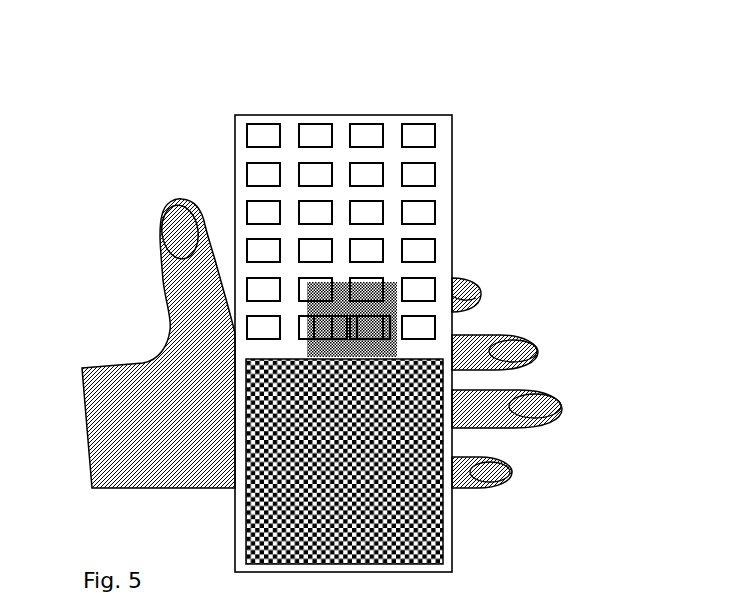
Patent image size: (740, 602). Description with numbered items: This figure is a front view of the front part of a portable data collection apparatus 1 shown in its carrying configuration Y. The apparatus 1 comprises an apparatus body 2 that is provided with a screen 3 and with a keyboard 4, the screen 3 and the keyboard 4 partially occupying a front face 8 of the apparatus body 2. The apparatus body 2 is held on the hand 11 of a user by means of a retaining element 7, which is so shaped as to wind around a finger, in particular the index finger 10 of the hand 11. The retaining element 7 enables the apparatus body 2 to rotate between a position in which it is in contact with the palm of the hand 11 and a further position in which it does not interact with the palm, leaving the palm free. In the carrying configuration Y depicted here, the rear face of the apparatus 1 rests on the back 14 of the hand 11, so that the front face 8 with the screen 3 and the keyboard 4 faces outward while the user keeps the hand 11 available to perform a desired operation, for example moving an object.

The portable data collection apparatus 1 is at (203, 100).
The apparatus body 2 is at (440, 112).
The screen 3 is at (427, 523).
The keyboard 4 is at (428, 172).
The retaining element 7 is at (397, 348).
The front face 8 is at (248, 192).
The index finger 10 is at (478, 284).
The hand 11 is at (152, 470).
The back of the hand 14 is at (143, 400).
The carrying configuration Y is at (563, 203).